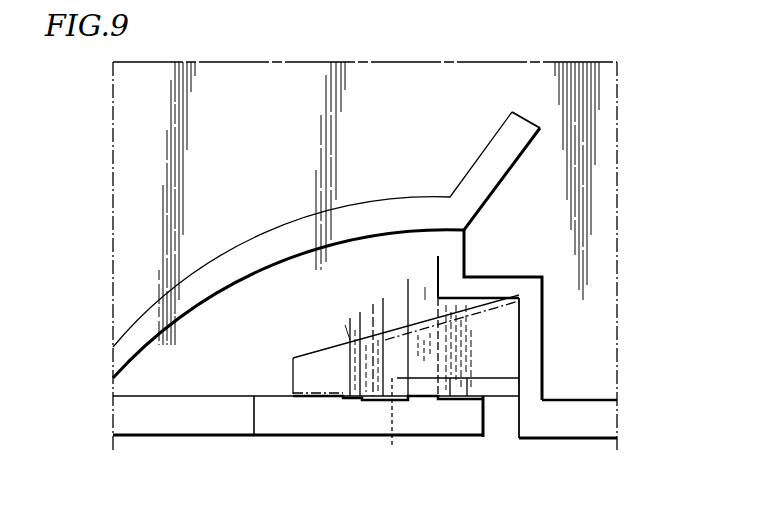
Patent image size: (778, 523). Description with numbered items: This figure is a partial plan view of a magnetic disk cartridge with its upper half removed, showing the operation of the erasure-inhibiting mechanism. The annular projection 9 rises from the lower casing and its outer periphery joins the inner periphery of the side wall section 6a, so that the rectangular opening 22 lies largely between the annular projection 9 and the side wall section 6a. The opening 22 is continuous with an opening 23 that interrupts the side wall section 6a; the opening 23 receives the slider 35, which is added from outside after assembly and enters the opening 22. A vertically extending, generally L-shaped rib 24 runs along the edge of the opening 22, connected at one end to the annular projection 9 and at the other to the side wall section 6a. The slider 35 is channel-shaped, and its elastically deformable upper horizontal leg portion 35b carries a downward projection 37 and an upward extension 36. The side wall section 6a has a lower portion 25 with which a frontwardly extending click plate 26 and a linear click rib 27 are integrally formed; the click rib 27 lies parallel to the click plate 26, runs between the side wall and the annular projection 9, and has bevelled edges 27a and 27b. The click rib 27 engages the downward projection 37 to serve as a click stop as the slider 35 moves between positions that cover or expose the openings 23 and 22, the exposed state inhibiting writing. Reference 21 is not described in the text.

The annular projection 9 is at (212, 350).
The click plate 26 is at (425, 287).
The click rib 27 is at (365, 322).
The bevelled edge 27a is at (391, 304).
The bevelled edge 27b is at (345, 325).
The rectangular opening 22 is at (500, 299).
The rib 24 is at (533, 335).
The slider 35 is at (478, 310).
The upper horizontal leg portion 35b is at (473, 398).
The side wall section 6a is at (227, 428).
The lower portion 25 is at (316, 423).
The base surface 21 is at (360, 433).
The projection 37 is at (390, 426).
The extension 36 is at (503, 390).
The opening 23 is at (515, 420).